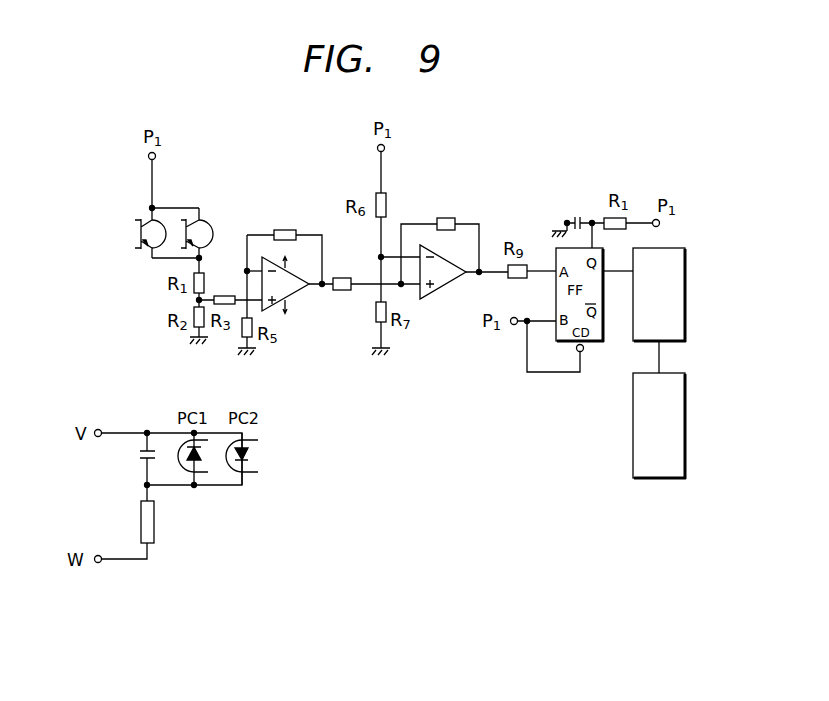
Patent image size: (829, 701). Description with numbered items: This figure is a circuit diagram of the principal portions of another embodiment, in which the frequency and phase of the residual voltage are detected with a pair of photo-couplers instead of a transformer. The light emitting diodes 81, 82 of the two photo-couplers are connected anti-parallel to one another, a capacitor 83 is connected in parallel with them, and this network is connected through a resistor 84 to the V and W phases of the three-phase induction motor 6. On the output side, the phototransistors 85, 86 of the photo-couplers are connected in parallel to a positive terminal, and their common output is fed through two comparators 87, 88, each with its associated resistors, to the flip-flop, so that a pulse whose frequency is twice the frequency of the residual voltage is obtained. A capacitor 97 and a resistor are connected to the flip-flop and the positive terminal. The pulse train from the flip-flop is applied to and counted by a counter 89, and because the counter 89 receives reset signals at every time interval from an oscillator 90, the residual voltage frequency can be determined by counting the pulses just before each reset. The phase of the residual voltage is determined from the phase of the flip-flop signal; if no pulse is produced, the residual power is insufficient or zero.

The light emitting diode 81 is at (176, 459).
The light emitting diode 82 is at (223, 461).
The capacitor 83 is at (131, 459).
The resistor 84 is at (145, 523).
The phototransistor 85 is at (140, 226).
The phototransistor 86 is at (185, 218).
The comparator 87 is at (290, 239).
The comparator 88 is at (444, 231).
The counter 89 is at (685, 263).
The oscillator 90 is at (685, 453).
The capacitor 97 is at (572, 215).
The three-phase induction motor 6 is at (618, 260).